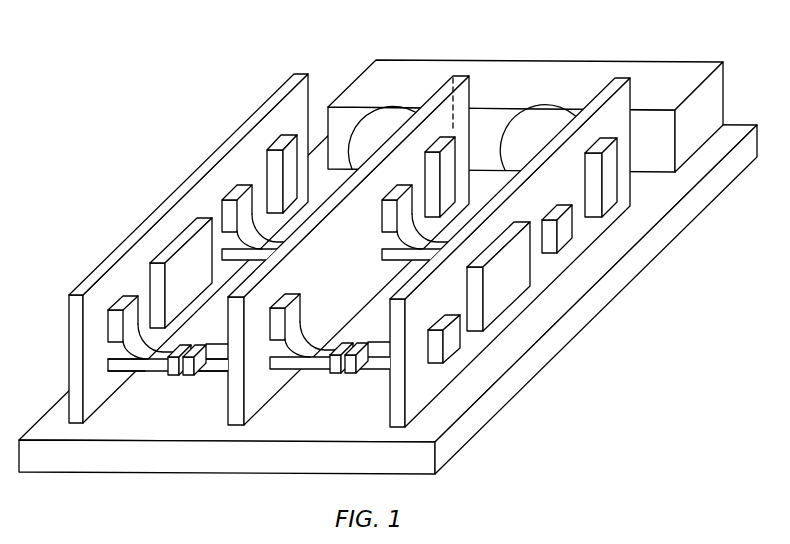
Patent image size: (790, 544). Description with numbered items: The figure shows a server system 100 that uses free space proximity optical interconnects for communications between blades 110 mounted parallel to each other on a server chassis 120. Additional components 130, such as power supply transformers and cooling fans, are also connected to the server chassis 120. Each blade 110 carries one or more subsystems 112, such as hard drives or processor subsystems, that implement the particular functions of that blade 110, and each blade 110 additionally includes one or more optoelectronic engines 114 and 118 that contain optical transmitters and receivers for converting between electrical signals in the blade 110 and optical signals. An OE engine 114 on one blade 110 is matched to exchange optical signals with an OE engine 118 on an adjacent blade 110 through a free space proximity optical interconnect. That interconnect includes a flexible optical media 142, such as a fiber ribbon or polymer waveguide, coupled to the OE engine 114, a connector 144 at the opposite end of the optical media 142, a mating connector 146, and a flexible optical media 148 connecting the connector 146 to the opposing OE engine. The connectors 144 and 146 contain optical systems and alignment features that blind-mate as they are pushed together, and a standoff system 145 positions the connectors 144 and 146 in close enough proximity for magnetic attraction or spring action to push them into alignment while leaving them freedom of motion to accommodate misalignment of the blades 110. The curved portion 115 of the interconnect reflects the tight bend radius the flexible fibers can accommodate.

The server system 100 is at (151, 70).
The blade 110 is at (92, 278).
The subsystem 112 is at (205, 283).
The optoelectronic engine 114 is at (123, 304).
The curved portion of flexure 115 is at (297, 213).
The optoelectronic engine 118 is at (233, 185).
The server chassis 120 is at (530, 363).
The additional components 130 is at (518, 77).
The flexible optical media 142 is at (157, 364).
The connector 144 is at (174, 378).
The standoff system 145 is at (135, 366).
The connector 146 is at (188, 378).
The flexible optical media 148 is at (220, 354).